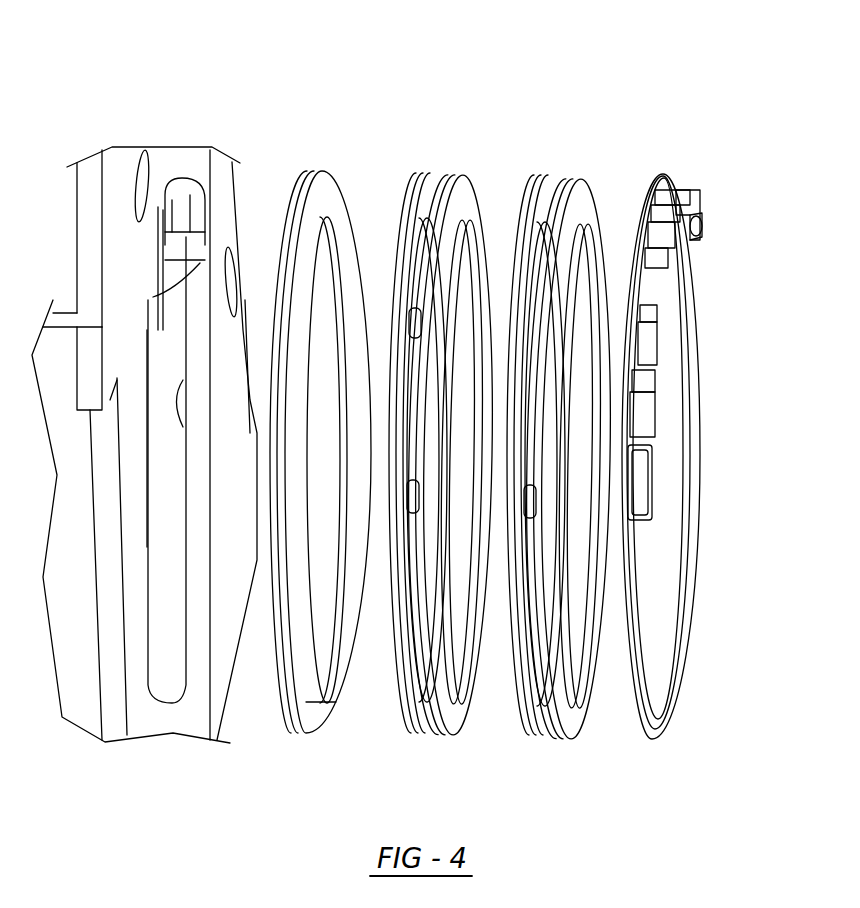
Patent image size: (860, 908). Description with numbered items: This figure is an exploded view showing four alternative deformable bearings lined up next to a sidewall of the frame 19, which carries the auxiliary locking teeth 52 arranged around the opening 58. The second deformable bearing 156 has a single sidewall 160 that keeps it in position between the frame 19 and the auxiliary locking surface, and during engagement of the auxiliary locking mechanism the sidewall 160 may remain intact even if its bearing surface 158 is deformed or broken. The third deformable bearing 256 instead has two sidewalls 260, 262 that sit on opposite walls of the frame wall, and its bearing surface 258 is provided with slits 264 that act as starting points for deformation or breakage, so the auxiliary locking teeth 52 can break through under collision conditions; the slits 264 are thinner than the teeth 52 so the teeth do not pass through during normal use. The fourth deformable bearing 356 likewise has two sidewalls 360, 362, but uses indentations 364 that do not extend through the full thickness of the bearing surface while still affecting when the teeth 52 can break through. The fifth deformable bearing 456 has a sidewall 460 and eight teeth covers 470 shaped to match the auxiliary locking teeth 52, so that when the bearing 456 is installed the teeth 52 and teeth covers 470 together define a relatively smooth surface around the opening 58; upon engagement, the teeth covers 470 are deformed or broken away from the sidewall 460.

The frame 19 is at (163, 152).
The auxiliary locking teeth 52 is at (200, 262).
The opening 58 is at (147, 547).
The second deformable bearing 156 is at (319, 373).
The bearing surface 158 is at (325, 228).
The sidewall 160 is at (300, 185).
The third deformable bearing 256 is at (452, 406).
The bearing surface 258 is at (415, 295).
The sidewall 260 is at (430, 175).
The sidewall 262 is at (473, 180).
The slits 264 is at (413, 483).
The fourth deformable bearing 356 is at (587, 431).
The sidewall 360 is at (540, 178).
The sidewall 362 is at (580, 180).
The indentations 364 is at (527, 490).
The fifth deformable bearing 456 is at (701, 374).
The sidewall 460 is at (665, 180).
The teeth covers 470 is at (660, 352).